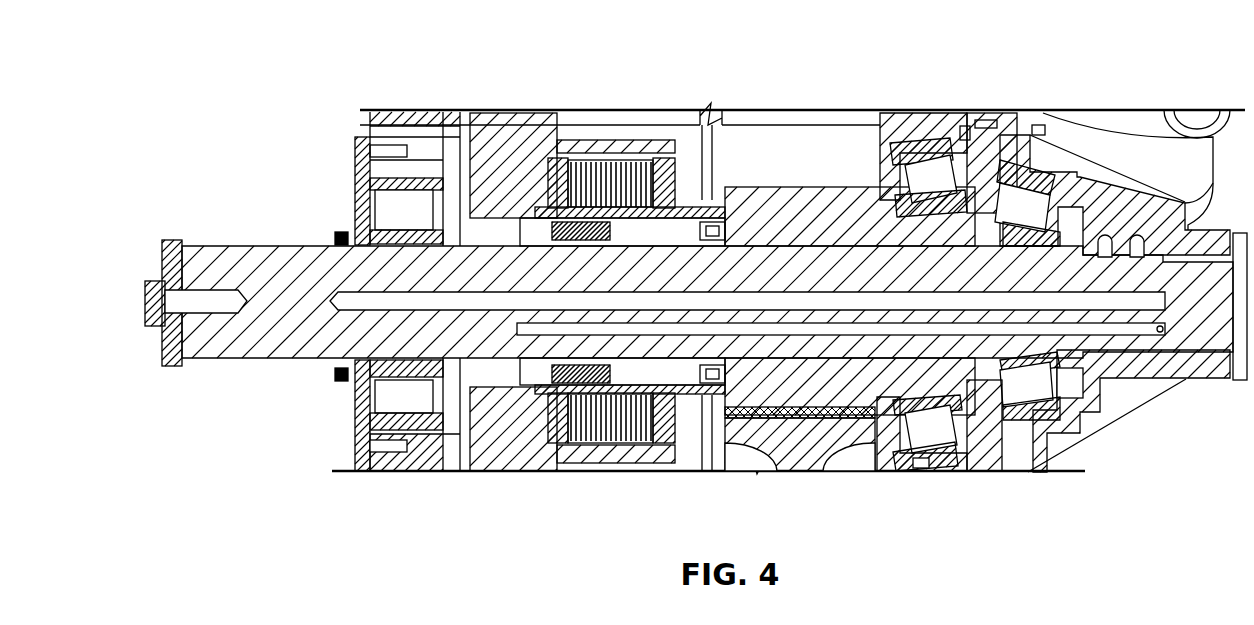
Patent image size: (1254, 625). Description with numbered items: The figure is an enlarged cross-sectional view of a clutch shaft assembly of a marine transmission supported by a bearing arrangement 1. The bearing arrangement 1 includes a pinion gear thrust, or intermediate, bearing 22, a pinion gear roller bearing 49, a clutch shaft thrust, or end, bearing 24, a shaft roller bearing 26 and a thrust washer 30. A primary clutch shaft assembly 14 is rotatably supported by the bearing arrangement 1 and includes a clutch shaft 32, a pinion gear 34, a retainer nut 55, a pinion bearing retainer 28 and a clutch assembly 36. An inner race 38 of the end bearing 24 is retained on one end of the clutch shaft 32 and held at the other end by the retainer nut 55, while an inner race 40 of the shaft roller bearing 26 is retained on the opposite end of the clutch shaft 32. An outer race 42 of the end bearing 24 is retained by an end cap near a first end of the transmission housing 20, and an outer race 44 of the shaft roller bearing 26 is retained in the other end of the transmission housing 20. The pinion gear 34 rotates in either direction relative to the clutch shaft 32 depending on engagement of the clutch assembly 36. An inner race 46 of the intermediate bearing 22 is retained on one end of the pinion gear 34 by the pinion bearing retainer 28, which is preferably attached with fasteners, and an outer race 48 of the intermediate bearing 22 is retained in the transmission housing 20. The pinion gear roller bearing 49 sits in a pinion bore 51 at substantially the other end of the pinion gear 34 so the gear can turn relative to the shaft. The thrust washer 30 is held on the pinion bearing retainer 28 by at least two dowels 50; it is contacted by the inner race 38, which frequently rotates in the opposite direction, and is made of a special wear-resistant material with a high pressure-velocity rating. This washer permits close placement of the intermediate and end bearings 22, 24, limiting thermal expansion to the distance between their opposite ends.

The bearing arrangement 1 is at (878, 85).
The primary clutch shaft assembly 14 is at (630, 108).
The transmission housing 20 is at (432, 474).
The pinion gear thrust (intermediate) bearing 22 is at (893, 450).
The clutch shaft thrust (end) bearing 24 is at (1072, 398).
The shaft roller bearing 26 is at (385, 392).
The pinion bearing retainer 28 is at (975, 420).
The thrust washer 30 is at (995, 130).
The clutch shaft 32 is at (228, 352).
The pinion gear 34 is at (772, 385).
The clutch assembly 36 is at (610, 440).
The inner race 38 is at (990, 400).
The inner race 40 is at (395, 225).
The outer race 42 is at (1055, 440).
The outer race 44 is at (395, 188).
The inner race 46 is at (900, 205).
The outer race 48 is at (900, 165).
The pinion gear roller bearing 49 is at (692, 400).
The dowels 50 is at (965, 126).
The pinion bore 51 is at (666, 380).
The retainer nut 55 is at (1078, 362).